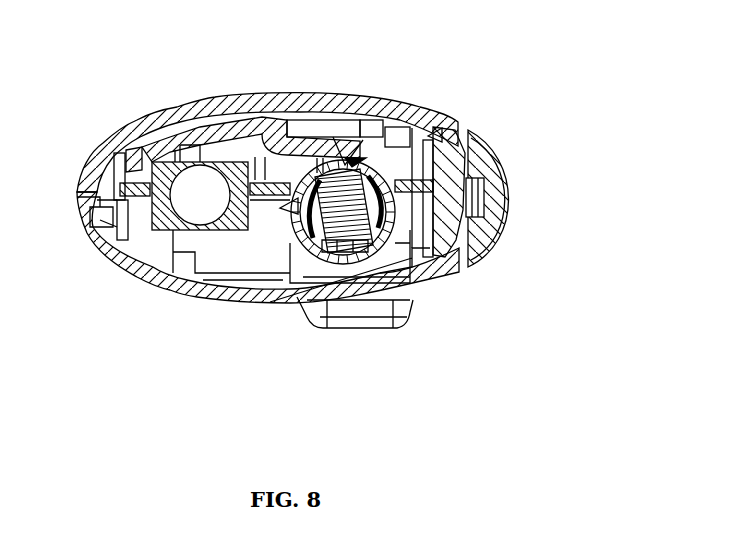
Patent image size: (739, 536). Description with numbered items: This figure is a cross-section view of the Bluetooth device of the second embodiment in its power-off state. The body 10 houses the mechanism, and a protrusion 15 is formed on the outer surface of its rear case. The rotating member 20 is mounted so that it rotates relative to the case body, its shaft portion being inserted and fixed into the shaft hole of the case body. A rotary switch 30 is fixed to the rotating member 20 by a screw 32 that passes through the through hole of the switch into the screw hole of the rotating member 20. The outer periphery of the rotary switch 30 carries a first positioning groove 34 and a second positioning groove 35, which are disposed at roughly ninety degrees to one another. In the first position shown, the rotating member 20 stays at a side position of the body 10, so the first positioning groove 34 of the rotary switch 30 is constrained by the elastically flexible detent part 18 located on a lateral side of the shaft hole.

The body 10 is at (152, 272).
The protrusion 15 is at (362, 312).
The detent part 18 is at (346, 140).
The rotating member 20 is at (508, 207).
The rotary switch 30 is at (335, 213).
The screw 32 is at (335, 213).
The first positioning groove 34 is at (300, 176).
The second positioning groove 35 is at (298, 203).